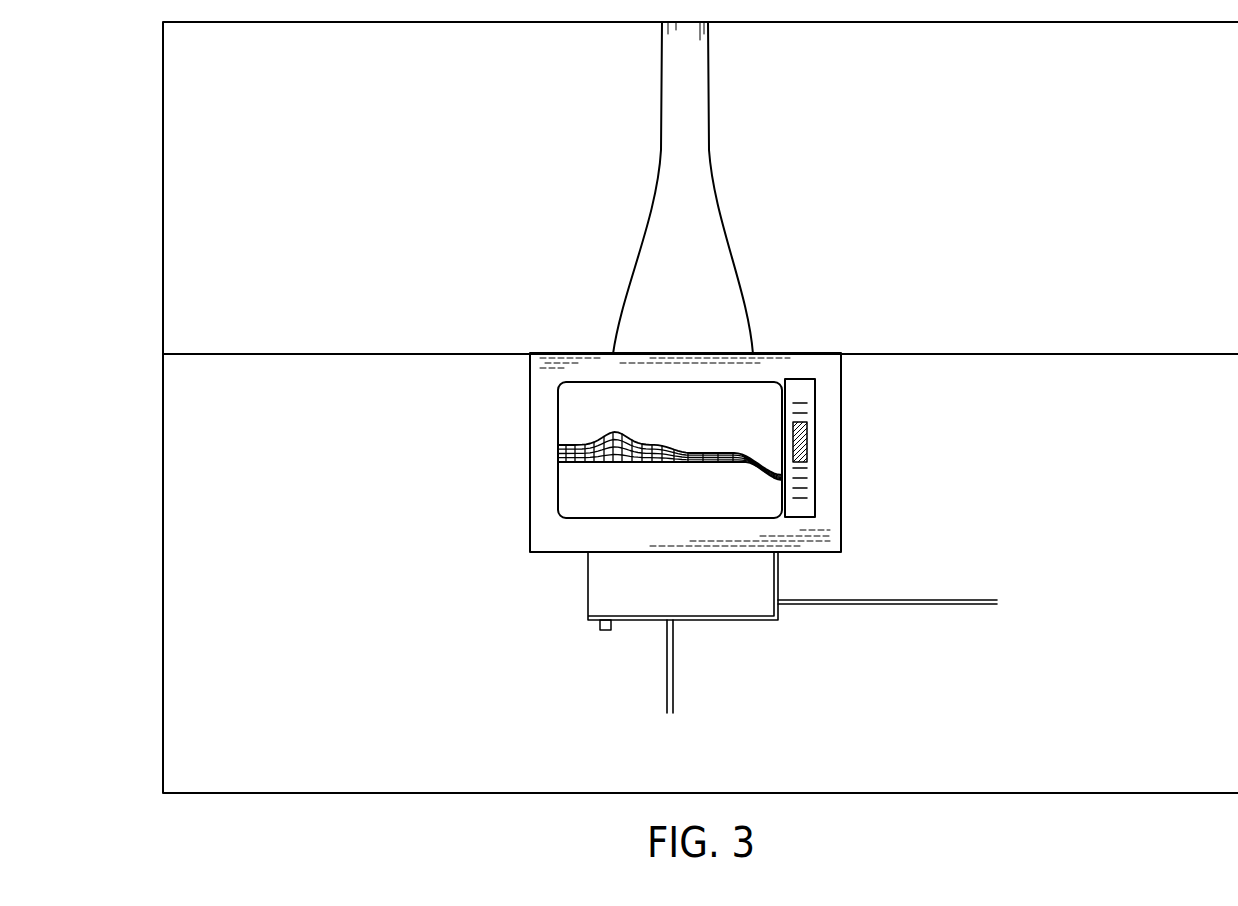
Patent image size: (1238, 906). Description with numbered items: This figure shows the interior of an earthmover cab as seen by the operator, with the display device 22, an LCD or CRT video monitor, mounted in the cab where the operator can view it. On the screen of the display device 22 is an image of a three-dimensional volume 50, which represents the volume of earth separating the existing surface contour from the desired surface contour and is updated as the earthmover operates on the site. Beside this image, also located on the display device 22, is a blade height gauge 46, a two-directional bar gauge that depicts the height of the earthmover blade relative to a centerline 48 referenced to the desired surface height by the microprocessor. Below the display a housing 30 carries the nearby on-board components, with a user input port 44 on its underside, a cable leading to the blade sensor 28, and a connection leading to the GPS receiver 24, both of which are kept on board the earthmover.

The display device 22 is at (560, 422).
The three-dimensional volume 50 is at (570, 465).
The blade height gauge 46 is at (808, 418).
The centerline 48 is at (808, 459).
The control unit housing 30 is at (770, 565).
The user input port 44 is at (603, 632).
The GPS receiver 24 is at (990, 617).
The blade sensor 28 is at (685, 673).